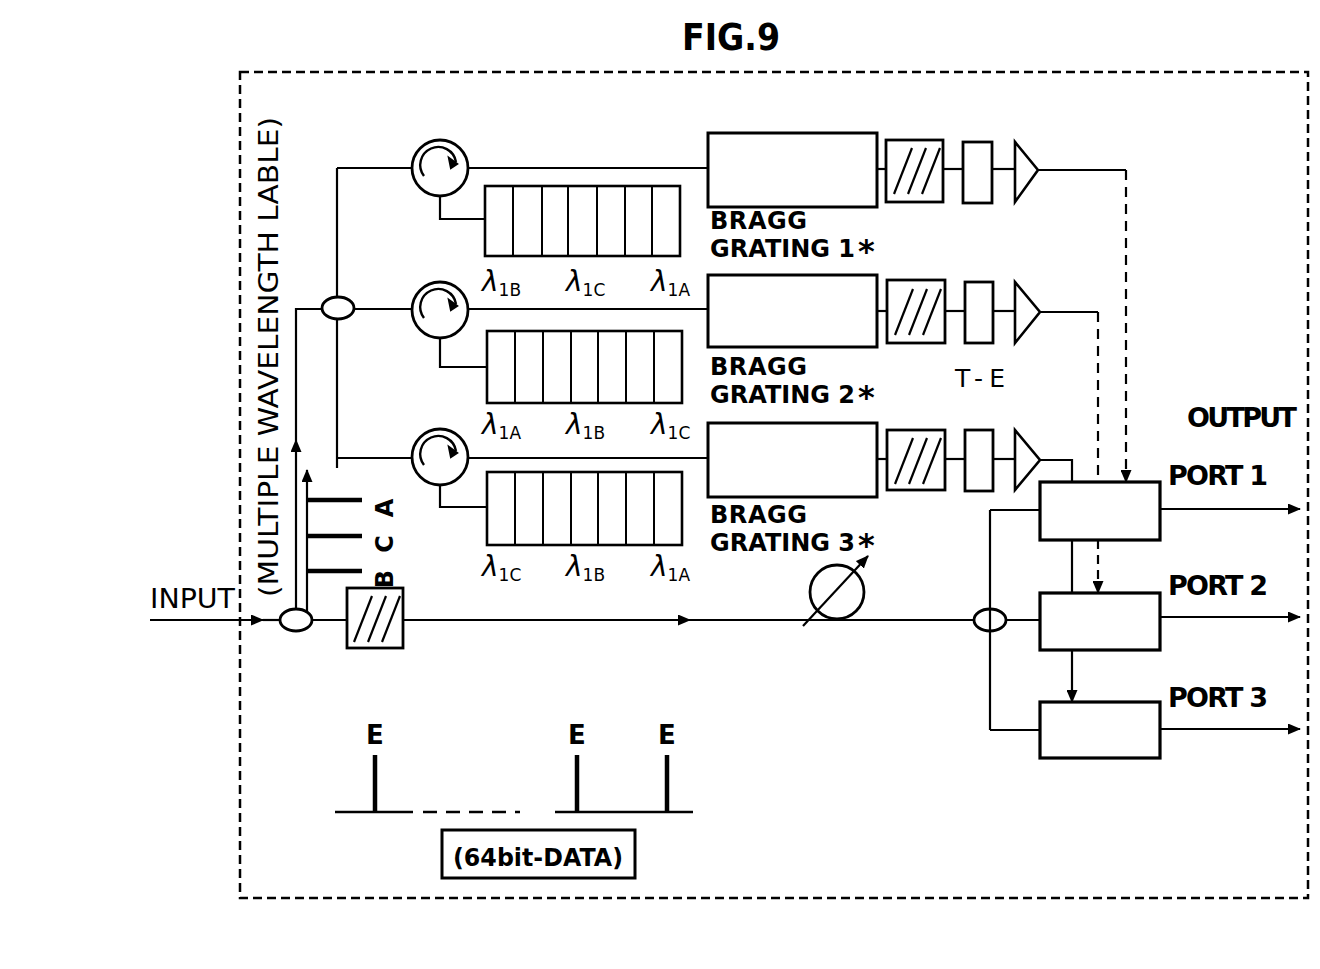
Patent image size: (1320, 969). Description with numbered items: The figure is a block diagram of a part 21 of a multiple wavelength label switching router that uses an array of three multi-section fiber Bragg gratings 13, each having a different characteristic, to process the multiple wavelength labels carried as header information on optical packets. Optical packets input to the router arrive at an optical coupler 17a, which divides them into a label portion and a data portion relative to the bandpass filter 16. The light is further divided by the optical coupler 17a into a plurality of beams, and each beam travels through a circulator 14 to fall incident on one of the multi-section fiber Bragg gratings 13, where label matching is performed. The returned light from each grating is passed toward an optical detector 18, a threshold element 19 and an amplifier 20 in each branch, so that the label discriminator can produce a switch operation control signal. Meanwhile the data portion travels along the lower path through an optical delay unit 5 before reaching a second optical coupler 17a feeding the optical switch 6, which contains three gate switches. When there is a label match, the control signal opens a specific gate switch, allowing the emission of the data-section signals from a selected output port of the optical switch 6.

The optical delay unit 5 is at (838, 623).
The optical switch 6 is at (1160, 743).
The multi-section fiber Bragg grating 13 is at (485, 238).
The circulator 14 is at (424, 146).
The bandpass filter 16 is at (915, 141).
The optical coupler 17a is at (328, 297).
The optical detector 18 is at (790, 136).
The threshold element 19 is at (975, 143).
The amplifier 20 is at (1030, 155).
The part of a multiple wavelength label switching router 21 is at (240, 790).